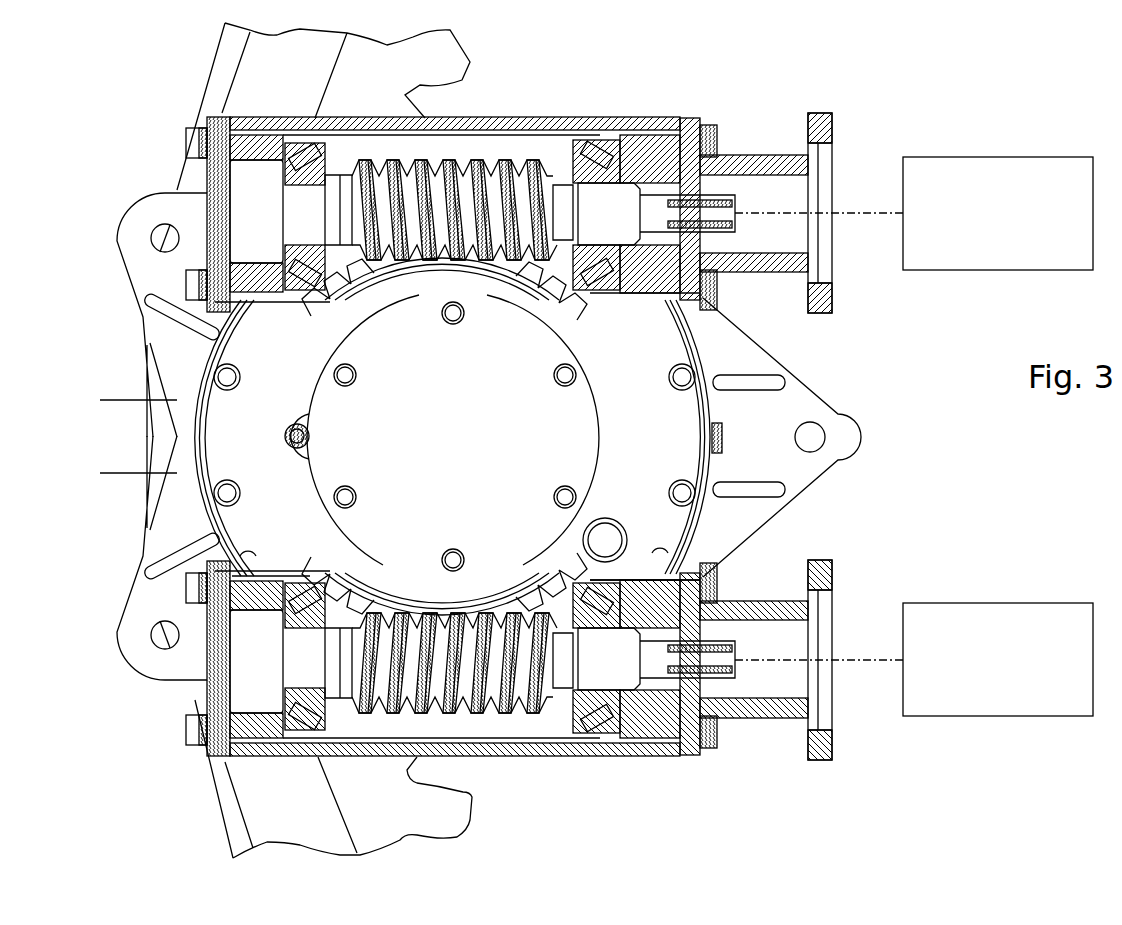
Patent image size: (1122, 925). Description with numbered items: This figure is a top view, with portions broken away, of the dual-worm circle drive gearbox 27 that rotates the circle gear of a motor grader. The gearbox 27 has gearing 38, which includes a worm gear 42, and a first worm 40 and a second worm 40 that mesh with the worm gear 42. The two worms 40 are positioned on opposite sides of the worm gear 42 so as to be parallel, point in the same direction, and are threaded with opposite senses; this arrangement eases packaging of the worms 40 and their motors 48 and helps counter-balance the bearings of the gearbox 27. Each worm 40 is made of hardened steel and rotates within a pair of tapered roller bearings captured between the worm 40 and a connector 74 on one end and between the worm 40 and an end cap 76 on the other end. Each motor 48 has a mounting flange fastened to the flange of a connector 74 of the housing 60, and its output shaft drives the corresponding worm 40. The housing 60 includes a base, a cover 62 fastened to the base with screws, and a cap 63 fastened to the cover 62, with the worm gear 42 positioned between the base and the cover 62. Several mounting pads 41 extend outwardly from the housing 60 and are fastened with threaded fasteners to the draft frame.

The dual-worm circle drive gearbox 27 is at (126, 84).
The gearing 38 is at (578, 262).
The worm 40 is at (477, 162).
The mounting pad 41 is at (130, 262).
The worm gear 42 is at (412, 265).
The motor 48 is at (1038, 157).
The housing 60 is at (195, 405).
The cover 62 is at (615, 470).
The cap 63 is at (565, 405).
The connector 74 is at (780, 160).
The end cap 76 is at (200, 178).